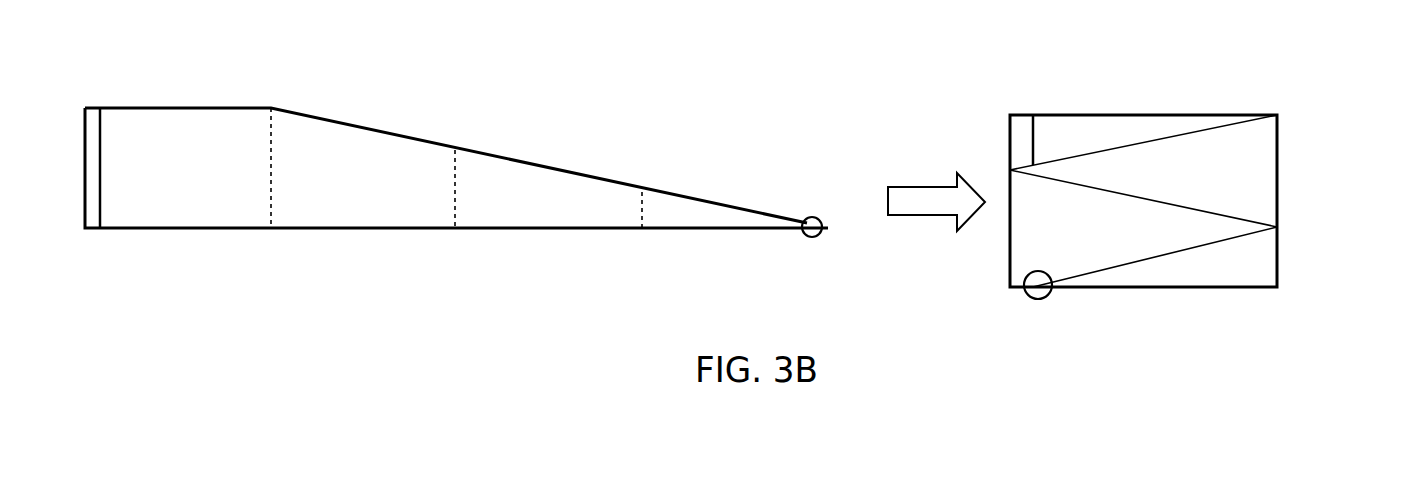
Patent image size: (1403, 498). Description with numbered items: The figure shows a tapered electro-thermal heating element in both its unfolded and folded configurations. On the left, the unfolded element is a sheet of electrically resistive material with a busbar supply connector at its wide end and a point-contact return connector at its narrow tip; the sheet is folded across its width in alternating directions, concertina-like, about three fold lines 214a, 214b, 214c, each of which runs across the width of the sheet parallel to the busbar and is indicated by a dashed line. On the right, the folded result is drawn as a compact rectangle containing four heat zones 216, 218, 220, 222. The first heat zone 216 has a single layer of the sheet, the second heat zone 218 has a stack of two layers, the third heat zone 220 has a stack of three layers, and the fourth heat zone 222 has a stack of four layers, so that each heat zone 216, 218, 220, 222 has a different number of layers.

The fold line 214a is at (272, 213).
The fold line 214b is at (455, 215).
The fold line 214c is at (645, 212).
The first heat zone 216 is at (1095, 148).
The second heat zone 218 is at (1247, 185).
The third heat zone 220 is at (1113, 240).
The fourth heat zone 222 is at (1263, 275).